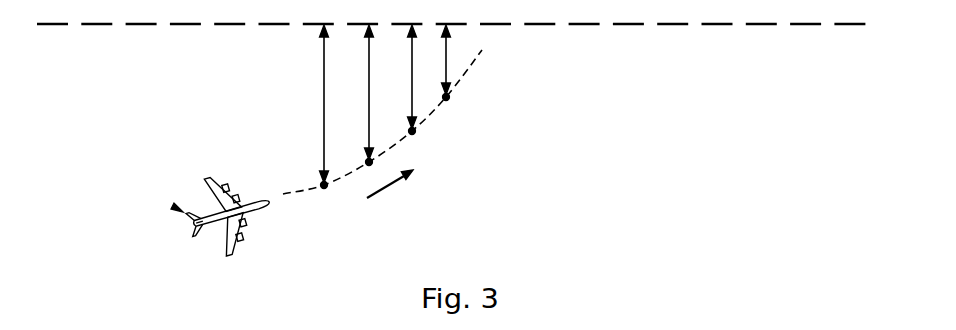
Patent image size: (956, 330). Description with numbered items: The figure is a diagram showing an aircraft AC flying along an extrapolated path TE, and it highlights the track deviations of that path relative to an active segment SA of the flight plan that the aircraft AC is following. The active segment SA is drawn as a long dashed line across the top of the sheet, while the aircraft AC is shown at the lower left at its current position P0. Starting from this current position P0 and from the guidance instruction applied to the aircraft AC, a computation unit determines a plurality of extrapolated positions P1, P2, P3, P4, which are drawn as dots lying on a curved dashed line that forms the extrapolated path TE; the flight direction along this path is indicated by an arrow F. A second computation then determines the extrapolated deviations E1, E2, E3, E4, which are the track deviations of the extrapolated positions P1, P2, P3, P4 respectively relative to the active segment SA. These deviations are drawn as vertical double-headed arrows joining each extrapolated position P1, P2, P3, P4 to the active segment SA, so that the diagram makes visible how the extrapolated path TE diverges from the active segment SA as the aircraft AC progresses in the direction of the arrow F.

The active segment SA is at (808, 26).
The extrapolated path TE is at (283, 193).
The aircraft AC is at (226, 228).
The current position P0 is at (180, 210).
The extrapolated position P1 is at (323, 190).
The extrapolated position P2 is at (368, 167).
The extrapolated position P3 is at (413, 131).
The extrapolated position P4 is at (447, 97).
The extrapolated deviation E1 is at (323, 84).
The extrapolated deviation E2 is at (368, 125).
The extrapolated deviation E3 is at (413, 82).
The extrapolated deviation E4 is at (447, 58).
The arrow F is at (383, 195).